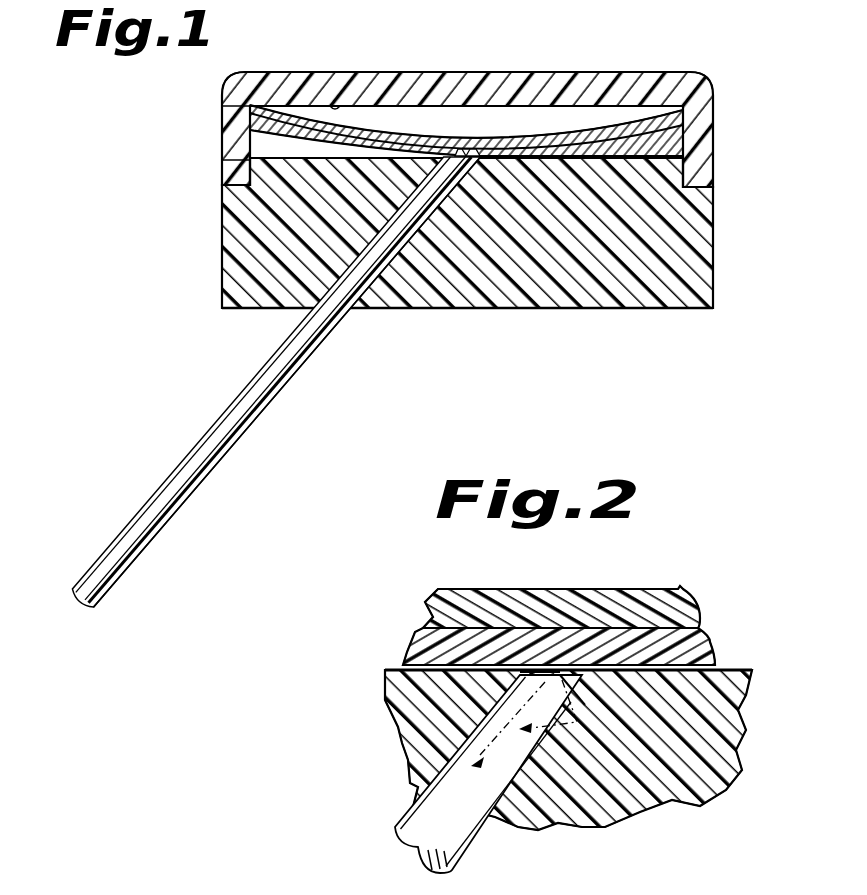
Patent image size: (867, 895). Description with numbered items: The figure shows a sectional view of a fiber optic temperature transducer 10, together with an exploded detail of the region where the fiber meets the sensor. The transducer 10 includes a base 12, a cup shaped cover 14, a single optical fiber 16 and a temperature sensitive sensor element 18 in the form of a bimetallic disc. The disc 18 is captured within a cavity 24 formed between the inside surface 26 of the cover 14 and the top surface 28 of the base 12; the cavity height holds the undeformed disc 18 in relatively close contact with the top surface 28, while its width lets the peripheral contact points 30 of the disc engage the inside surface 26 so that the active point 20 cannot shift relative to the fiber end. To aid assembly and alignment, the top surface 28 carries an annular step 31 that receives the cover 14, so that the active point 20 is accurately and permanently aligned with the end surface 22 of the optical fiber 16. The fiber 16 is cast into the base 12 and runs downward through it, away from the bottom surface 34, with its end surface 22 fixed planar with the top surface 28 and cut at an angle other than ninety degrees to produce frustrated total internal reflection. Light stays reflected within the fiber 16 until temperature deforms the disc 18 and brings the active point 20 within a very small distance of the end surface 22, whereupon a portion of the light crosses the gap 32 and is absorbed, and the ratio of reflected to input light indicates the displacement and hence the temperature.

In FIG. 1, the fiber optic temperature transducer 10 is at (712, 60).
In FIG. 1, the base 12 is at (567, 310).
In FIG. 2, the base 12 is at (672, 800).
In FIG. 1, the cover 14 is at (406, 70).
In FIG. 1, the optical fiber 16 is at (147, 503).
In FIG. 2, the optical fiber 16 is at (405, 802).
In FIG. 1, the sensor element 18 is at (604, 116).
In FIG. 2, the sensor element 18 is at (646, 594).
In FIG. 1, the active point 20 is at (470, 150).
In FIG. 2, the active point 20 is at (554, 665).
In FIG. 1, the end surface 22 is at (462, 150).
In FIG. 2, the end surface 22 is at (697, 645).
In FIG. 1, the cavity 24 is at (525, 118).
In FIG. 1, the inside surface 26 is at (335, 106).
In FIG. 1, the top surface 28 is at (672, 150).
In FIG. 2, the top surface 28 is at (735, 672).
In FIG. 1, the peripheral contact points 30 is at (240, 97).
In FIG. 1, the annular step 31 is at (222, 160).
In FIG. 2, the gap 32 is at (580, 663).
In FIG. 1, the bottom surface 34 is at (432, 310).